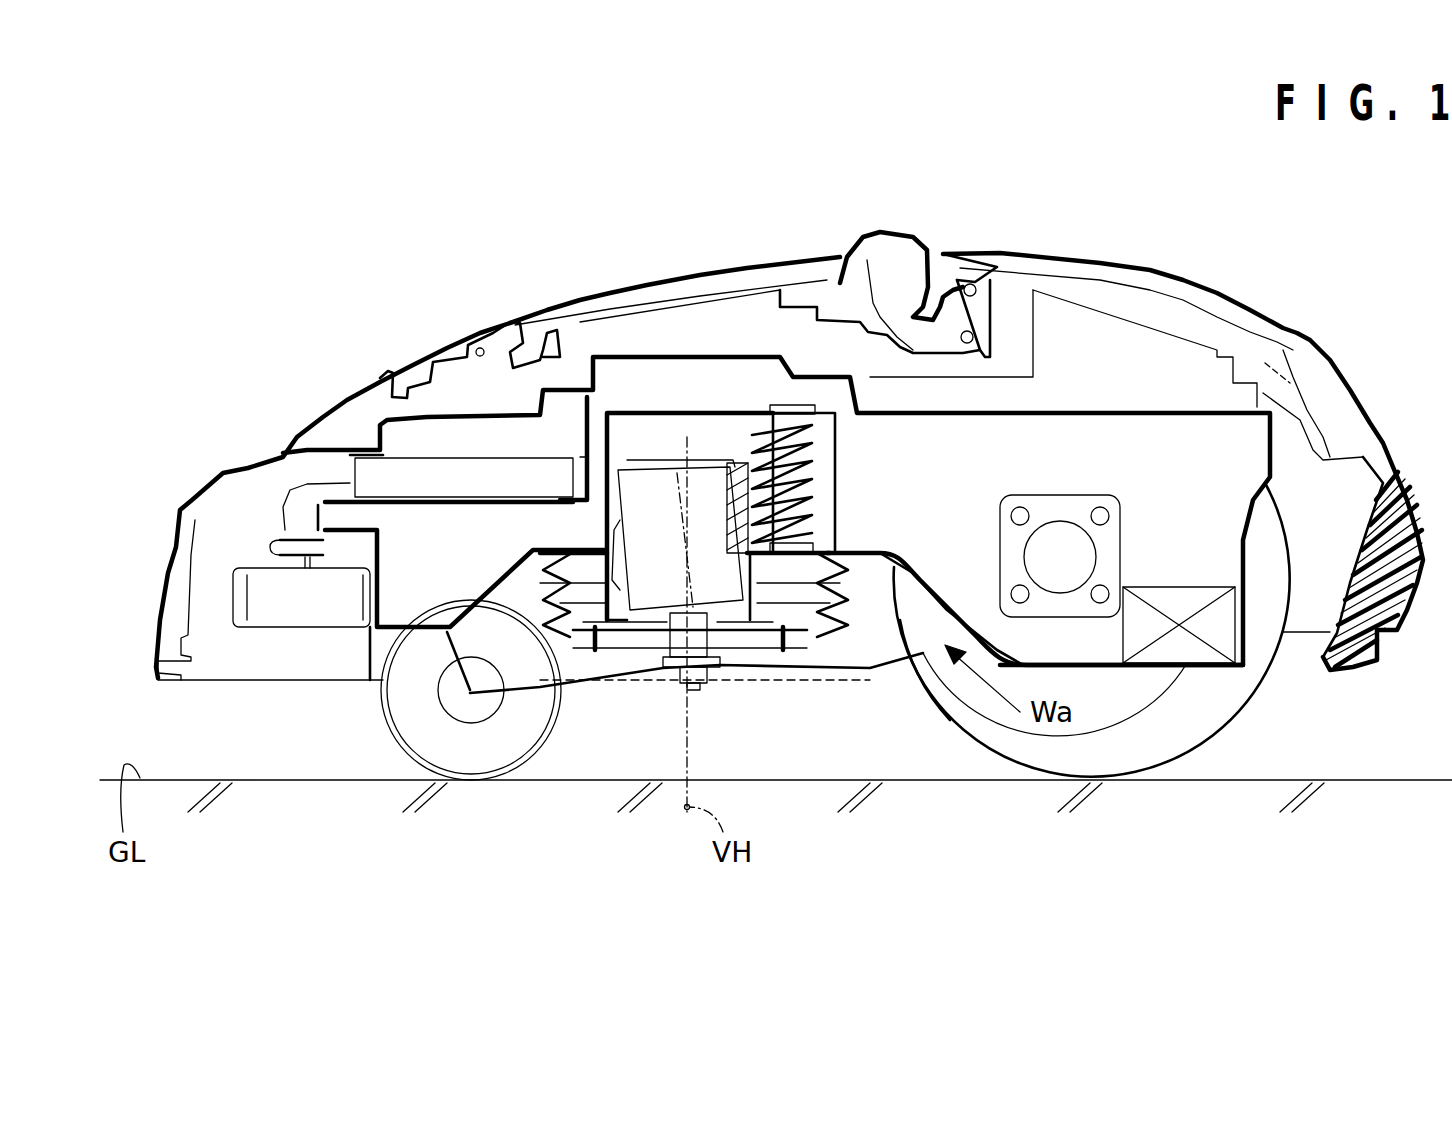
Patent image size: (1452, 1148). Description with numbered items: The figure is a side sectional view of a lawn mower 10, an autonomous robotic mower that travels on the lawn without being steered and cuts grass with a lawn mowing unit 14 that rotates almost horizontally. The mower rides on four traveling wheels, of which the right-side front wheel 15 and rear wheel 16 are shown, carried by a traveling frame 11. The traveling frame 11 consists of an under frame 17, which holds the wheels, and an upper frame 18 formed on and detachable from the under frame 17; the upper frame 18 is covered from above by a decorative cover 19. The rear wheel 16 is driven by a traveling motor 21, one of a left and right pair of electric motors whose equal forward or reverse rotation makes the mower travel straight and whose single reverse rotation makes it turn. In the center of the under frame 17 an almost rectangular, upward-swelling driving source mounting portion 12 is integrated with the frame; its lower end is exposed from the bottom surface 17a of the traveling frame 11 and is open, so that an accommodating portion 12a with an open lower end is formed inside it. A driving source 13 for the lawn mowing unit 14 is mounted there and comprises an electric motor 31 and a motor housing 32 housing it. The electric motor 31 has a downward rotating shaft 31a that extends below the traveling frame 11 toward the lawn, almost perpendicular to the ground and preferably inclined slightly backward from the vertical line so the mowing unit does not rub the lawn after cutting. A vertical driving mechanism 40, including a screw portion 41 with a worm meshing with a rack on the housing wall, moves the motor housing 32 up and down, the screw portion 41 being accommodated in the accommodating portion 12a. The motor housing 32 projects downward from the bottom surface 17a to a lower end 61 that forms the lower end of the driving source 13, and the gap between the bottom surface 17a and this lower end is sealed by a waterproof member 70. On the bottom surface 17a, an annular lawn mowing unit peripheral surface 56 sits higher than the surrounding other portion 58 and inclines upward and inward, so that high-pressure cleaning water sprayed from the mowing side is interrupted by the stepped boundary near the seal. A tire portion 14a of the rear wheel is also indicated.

The lawn mower 10 is at (262, 206).
The traveling frame 11 is at (320, 870).
The driving source mounting portion 12 is at (627, 413).
The accommodating portion 12a is at (665, 452).
The driving source 13 is at (820, 193).
The lawn mowing unit 14 is at (857, 715).
The tire 14a is at (940, 656).
The front wheel 15 is at (475, 762).
The rear wheel 16 is at (1053, 762).
The under frame 17 is at (370, 512).
The bottom surface 17a is at (418, 637).
The upper frame 18 is at (357, 570).
The decorative cover 19 is at (557, 300).
The traveling motor 21 is at (1077, 555).
The electric motor 31 is at (707, 477).
The rotating shaft 31a is at (650, 655).
The motor housing 32 is at (740, 477).
The vertical driving mechanism 40 is at (815, 440).
The screw portion 41 is at (813, 487).
The lawn mowing unit peripheral surface 56 is at (868, 585).
The other portion 58 is at (1000, 668).
The lower end 61 is at (760, 630).
The waterproof member 70 is at (822, 635).